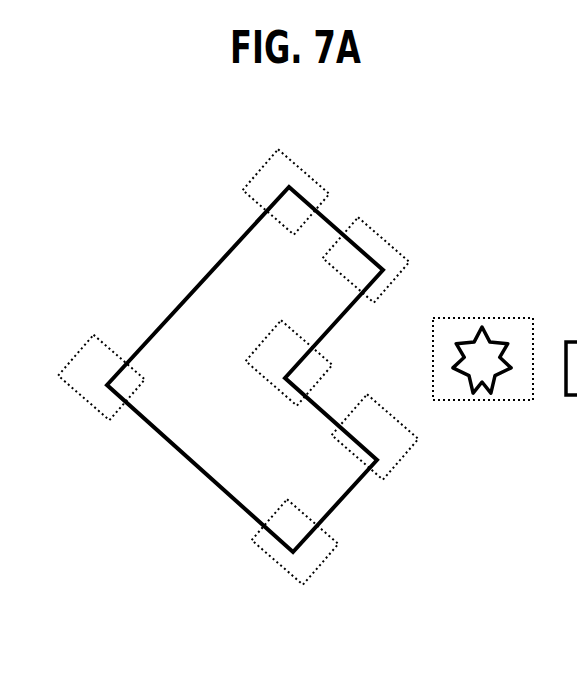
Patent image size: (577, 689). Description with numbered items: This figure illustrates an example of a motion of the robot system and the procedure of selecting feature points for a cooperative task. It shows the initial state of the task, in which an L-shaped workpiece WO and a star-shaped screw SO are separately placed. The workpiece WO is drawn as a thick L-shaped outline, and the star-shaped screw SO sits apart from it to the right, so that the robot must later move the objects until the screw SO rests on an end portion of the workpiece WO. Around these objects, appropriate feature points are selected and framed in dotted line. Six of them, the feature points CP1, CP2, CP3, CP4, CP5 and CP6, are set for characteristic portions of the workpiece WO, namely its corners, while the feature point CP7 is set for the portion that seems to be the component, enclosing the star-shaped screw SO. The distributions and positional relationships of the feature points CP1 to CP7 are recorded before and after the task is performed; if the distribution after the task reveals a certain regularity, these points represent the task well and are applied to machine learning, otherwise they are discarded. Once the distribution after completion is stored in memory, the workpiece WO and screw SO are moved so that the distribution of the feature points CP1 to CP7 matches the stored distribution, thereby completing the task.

The L-shaped workpiece WO is at (220, 461).
The feature point CP1 is at (302, 172).
The feature point CP2 is at (75, 393).
The feature point CP3 is at (320, 572).
The feature point CP4 is at (405, 462).
The feature point CP5 is at (322, 350).
The feature point CP6 is at (385, 240).
The feature point CP7 is at (498, 318).
The star-shaped screw SO is at (482, 370).